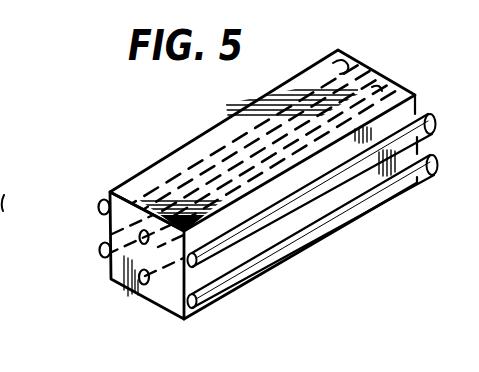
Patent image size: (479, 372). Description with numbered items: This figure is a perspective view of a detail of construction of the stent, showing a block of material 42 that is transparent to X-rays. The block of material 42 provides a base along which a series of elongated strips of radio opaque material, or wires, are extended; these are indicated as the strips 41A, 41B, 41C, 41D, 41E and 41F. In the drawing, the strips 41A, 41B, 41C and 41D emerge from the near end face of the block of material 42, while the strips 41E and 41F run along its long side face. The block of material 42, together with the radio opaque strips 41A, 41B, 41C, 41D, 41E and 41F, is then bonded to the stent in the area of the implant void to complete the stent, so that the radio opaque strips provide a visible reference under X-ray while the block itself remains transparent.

The block of material 42 is at (174, 323).
The elongated strip of radio opaque material 41A is at (103, 254).
The elongated strip of radio opaque material 41B is at (101, 203).
The elongated strip of radio opaque material 41C is at (139, 284).
The elongated strip of radio opaque material 41D is at (147, 231).
The elongated strip of radio opaque material 41E is at (419, 113).
The elongated strip of radio opaque material 41F is at (373, 197).